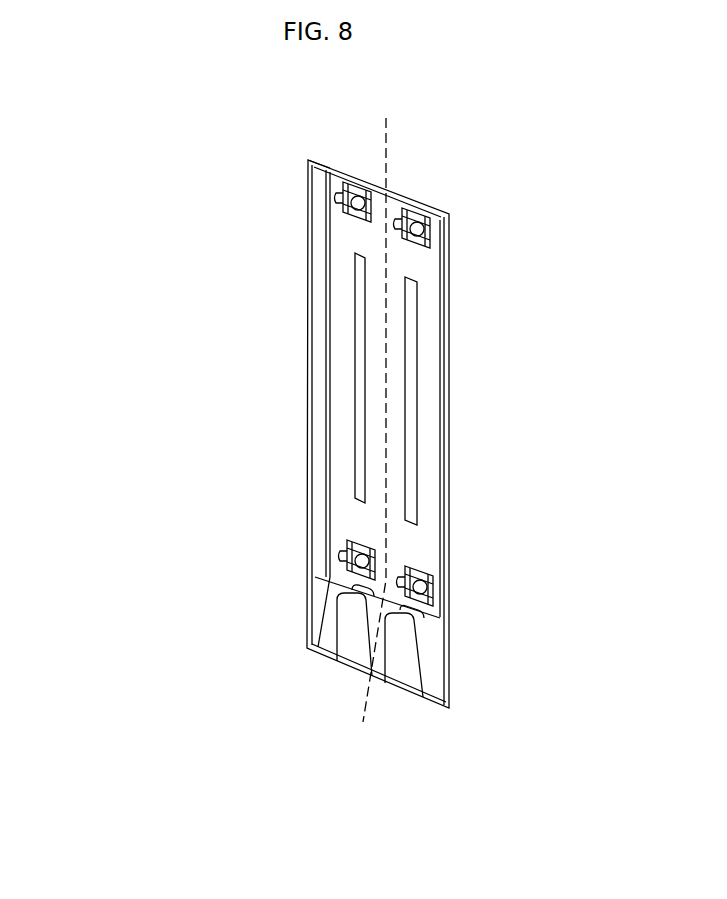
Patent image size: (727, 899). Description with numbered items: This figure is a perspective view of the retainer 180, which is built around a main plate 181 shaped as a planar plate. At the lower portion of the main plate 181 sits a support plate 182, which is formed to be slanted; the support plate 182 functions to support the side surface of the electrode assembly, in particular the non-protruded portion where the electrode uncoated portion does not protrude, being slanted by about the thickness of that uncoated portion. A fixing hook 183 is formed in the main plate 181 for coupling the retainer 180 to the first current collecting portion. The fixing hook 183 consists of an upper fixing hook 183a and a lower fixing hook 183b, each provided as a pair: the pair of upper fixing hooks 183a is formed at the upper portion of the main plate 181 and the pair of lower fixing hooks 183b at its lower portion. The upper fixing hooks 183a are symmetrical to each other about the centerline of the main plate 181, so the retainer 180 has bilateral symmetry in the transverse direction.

The retainer 180 is at (131, 112).
The main plate 181 is at (445, 409).
The support plate 182 is at (444, 652).
The fixing hook 183 is at (195, 251).
The upper fixing hook 183a is at (410, 229).
The lower fixing hook 183b is at (410, 585).